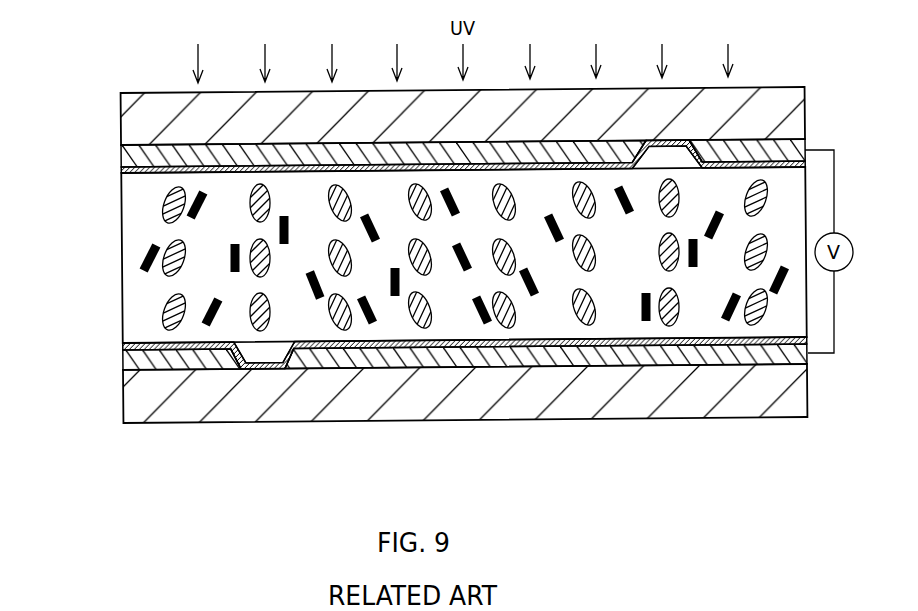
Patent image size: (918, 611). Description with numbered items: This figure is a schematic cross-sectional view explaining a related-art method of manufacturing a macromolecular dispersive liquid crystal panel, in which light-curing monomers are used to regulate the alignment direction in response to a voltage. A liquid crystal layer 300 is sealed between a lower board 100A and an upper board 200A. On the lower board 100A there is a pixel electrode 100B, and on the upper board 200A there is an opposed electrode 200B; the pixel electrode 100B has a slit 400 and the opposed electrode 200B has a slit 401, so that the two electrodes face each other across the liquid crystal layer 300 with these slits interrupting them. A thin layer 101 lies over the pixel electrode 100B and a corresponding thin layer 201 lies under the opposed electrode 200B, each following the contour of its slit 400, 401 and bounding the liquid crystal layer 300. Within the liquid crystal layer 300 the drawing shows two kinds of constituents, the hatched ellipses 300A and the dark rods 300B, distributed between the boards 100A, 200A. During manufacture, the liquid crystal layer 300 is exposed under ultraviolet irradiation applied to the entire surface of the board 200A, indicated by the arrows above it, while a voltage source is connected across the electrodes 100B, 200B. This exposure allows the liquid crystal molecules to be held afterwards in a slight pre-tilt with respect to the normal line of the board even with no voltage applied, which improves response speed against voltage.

The board 200A is at (130, 118).
The opposed electrode 200B is at (130, 158).
The upper alignment layer 201 is at (130, 173).
The slit 401 is at (680, 117).
The liquid crystal layer 300 is at (433, 327).
The liquid crystal molecules 300A is at (340, 330).
The polymerizable monomers 300B is at (473, 322).
The lower alignment layer 101 is at (130, 345).
The slit 400 is at (263, 392).
The pixel electrode 100B is at (130, 362).
The board 100A is at (135, 400).